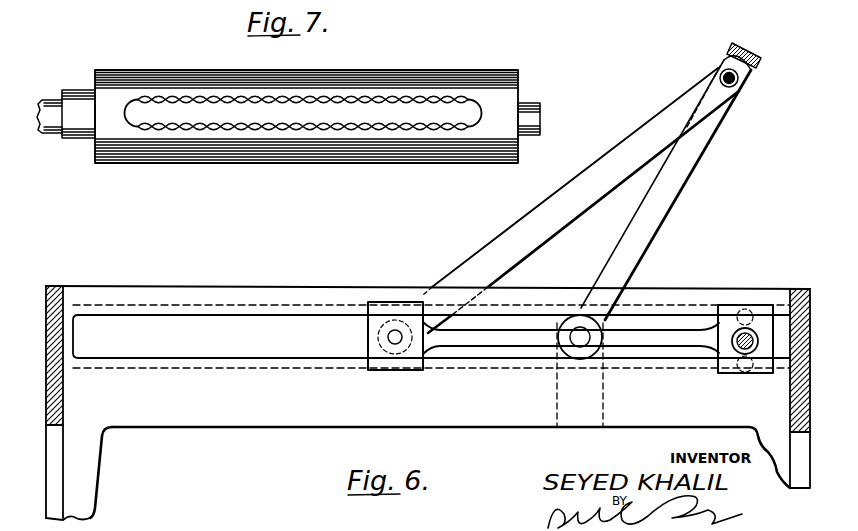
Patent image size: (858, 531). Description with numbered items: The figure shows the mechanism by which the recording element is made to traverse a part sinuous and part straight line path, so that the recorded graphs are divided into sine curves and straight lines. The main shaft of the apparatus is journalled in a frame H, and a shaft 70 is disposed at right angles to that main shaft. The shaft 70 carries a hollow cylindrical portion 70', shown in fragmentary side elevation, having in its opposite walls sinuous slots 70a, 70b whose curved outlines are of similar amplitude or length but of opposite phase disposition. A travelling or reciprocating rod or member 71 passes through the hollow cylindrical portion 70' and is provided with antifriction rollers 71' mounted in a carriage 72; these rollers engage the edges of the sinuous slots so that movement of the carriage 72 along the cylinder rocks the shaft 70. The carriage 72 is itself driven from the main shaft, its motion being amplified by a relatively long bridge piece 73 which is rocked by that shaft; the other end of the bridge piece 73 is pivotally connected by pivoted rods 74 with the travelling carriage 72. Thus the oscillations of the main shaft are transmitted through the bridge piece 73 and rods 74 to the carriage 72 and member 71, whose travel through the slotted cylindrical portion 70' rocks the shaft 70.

In FIG. 7, the shaft 70 is at (49, 101).
In FIG. 7, the hollow cylindrical portion 70' is at (301, 104).
In FIG. 7, the sinuous slot 70a is at (422, 108).
In FIG. 7, the sinuous slot 70b is at (418, 128).
In FIG. 6, the travelling rod 71 is at (756, 308).
In FIG. 6, the antifriction roller 71' is at (729, 317).
In FIG. 6, the carriage 72 is at (729, 362).
In FIG. 6, the bridge piece 73 is at (690, 154).
In FIG. 6, the pivoted rod 74 is at (623, 149).
In FIG. 6, the frame H is at (428, 403).